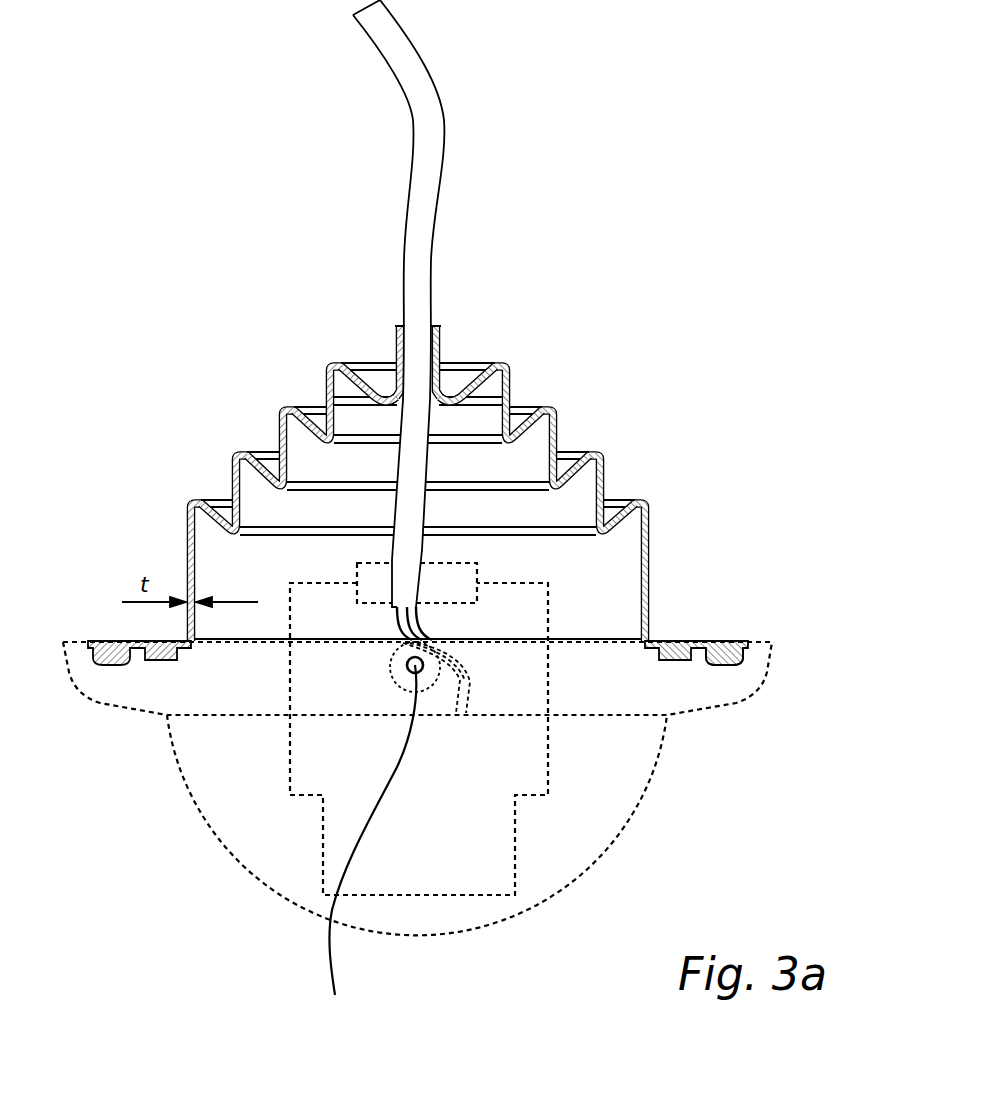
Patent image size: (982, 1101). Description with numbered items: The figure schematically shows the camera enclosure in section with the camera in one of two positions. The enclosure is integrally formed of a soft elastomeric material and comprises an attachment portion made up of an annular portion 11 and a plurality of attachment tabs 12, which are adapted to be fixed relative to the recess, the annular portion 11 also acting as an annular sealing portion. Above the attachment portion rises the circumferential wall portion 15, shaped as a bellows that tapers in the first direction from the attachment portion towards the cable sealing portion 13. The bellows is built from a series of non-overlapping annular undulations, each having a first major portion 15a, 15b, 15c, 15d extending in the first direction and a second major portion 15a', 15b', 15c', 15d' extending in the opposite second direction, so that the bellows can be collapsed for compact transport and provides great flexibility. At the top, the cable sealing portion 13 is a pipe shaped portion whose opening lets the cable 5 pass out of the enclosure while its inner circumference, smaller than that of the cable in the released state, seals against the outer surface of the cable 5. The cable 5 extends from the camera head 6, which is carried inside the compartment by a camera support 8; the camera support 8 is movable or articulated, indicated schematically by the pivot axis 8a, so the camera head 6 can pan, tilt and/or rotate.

The cable 5 is at (443, 137).
The camera head 6 is at (472, 862).
The camera support 8 is at (548, 615).
The pivot axis 8a is at (372, 848).
The annular portion 11 is at (665, 658).
The attachment tabs 12 is at (722, 667).
The cable sealing portion 13 is at (453, 330).
The circumferential wall portion 15 is at (352, 448).
The first major portion 15a is at (346, 558).
The second major portion 15a' is at (376, 470).
The first major portion 15b is at (375, 448).
The second major portion 15b' is at (401, 420).
The first major portion 15c is at (391, 395).
The second major portion 15c' is at (410, 369).
The first major portion 15d is at (411, 344).
The second major portion 15d' is at (418, 356).